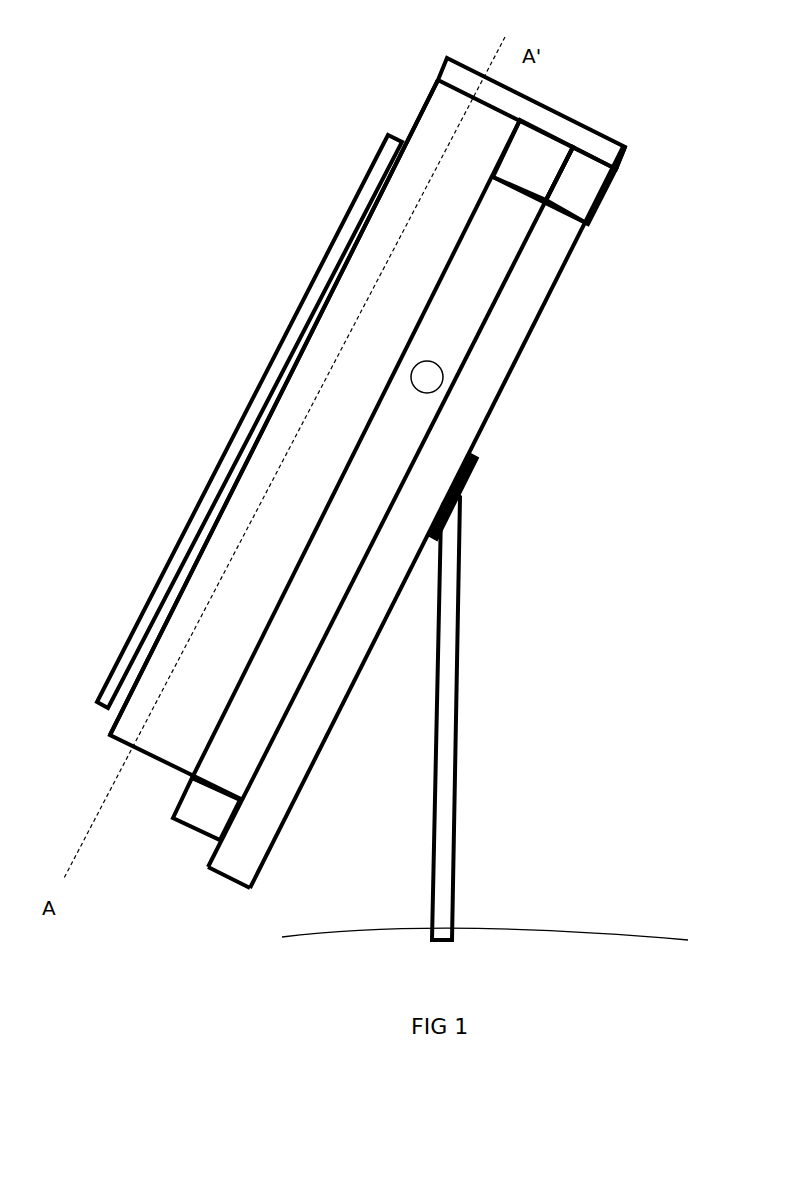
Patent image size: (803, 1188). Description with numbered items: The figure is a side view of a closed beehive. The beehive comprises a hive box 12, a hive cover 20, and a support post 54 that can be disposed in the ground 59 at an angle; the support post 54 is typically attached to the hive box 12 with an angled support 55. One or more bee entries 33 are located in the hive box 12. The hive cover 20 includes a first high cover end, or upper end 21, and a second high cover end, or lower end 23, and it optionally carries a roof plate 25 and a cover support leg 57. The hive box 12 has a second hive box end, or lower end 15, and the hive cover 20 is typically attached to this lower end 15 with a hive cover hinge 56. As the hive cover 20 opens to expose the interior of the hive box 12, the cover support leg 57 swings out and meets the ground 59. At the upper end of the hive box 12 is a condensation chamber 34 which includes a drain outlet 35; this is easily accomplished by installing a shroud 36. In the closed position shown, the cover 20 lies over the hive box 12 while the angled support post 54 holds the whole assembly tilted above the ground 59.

The hive box 12 is at (470, 305).
The lower end of hive box 15 is at (207, 802).
The hive cover 20 is at (365, 297).
The upper end of hive cover 21 is at (465, 96).
The lower end of hive cover 23 is at (137, 752).
The roof plate 25 is at (617, 140).
The bee entry 33 is at (432, 375).
The condensation chamber 34 is at (530, 165).
The drain outlet 35 is at (590, 227).
The shroud 36 is at (580, 192).
The support post 54 is at (450, 543).
The angled support 55 is at (472, 462).
The hive cover hinge 56 is at (193, 778).
The cover support leg 57 is at (363, 187).
The ground 59 is at (467, 938).